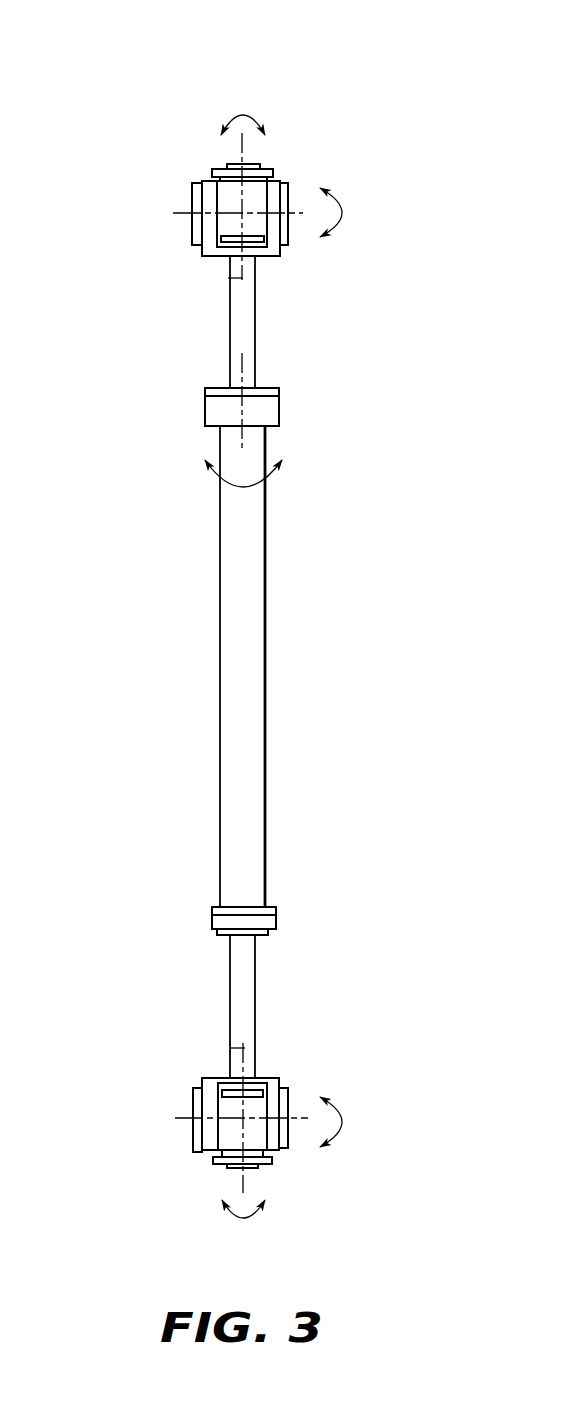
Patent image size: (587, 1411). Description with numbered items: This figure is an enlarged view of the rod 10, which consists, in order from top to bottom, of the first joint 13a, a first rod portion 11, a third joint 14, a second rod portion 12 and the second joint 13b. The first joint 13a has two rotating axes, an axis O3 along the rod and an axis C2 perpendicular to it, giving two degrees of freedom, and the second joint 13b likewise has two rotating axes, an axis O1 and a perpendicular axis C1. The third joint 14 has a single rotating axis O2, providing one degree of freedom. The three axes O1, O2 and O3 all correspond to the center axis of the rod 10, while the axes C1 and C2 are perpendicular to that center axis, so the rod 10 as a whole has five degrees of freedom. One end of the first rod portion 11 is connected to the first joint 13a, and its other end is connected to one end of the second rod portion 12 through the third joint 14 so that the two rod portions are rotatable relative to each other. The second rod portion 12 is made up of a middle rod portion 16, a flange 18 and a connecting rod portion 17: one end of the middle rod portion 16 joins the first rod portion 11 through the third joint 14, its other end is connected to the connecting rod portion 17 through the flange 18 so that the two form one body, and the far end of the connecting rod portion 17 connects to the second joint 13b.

The rod 10 is at (167, 90).
The first rod portion 11 is at (240, 330).
The second rod portion 12 is at (313, 538).
The first joint 13a is at (297, 162).
The second joint 13b is at (302, 1177).
The third joint 14 is at (293, 403).
The middle rod portion 16 is at (252, 594).
The connecting rod portion 17 is at (245, 998).
The flange 18 is at (268, 923).
The axis O1 is at (243, 1048).
The axis O2 is at (242, 435).
The axis O3 is at (228, 278).
The axis C1 is at (182, 1118).
The axis C2 is at (182, 212).